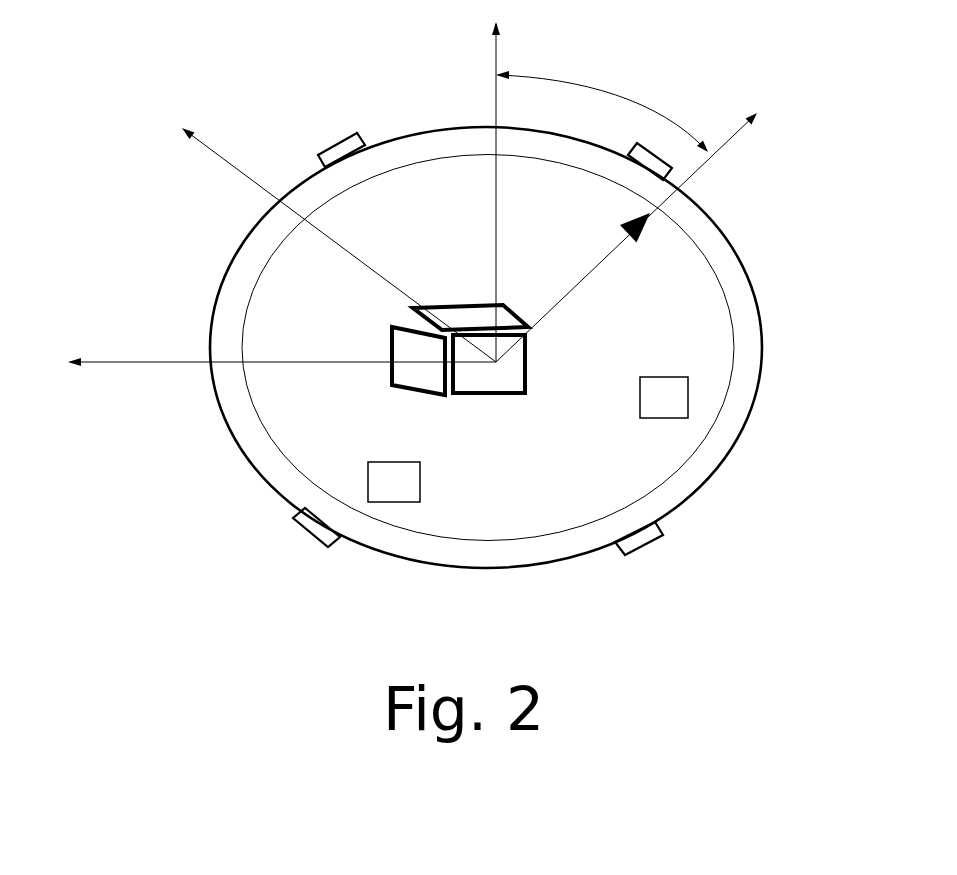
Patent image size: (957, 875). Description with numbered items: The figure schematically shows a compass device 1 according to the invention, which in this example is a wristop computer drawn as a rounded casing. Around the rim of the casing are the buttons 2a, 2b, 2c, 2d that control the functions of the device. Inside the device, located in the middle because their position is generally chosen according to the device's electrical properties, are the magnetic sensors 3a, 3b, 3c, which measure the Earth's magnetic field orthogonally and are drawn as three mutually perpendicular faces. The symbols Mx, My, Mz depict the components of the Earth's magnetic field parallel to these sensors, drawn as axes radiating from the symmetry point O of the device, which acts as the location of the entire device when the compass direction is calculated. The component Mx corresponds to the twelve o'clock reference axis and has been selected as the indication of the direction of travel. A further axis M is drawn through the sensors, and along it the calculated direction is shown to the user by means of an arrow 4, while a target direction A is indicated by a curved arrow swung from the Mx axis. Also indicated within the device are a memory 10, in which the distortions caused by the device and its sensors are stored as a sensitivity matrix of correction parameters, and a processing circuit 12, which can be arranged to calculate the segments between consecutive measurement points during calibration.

The compass device 1 is at (758, 312).
The button 2a is at (337, 142).
The button 2b is at (640, 175).
The button 2c is at (323, 537).
The button 2d is at (643, 547).
The magnetic sensor 3a is at (447, 302).
The magnetic sensor 3b is at (420, 388).
The magnetic sensor 3c is at (527, 382).
The arrow 4 is at (657, 232).
The memory 10 is at (408, 493).
The processing circuit 12 is at (679, 408).
The symmetry point O is at (496, 362).
The target direction A is at (602, 108).
The magnetic field axis M is at (649, 237).
The x-component of the Earth's magnetic field Mx is at (480, 181).
The y-component of the Earth's magnetic field My is at (282, 378).
The z-component of the Earth's magnetic field Mz is at (339, 234).